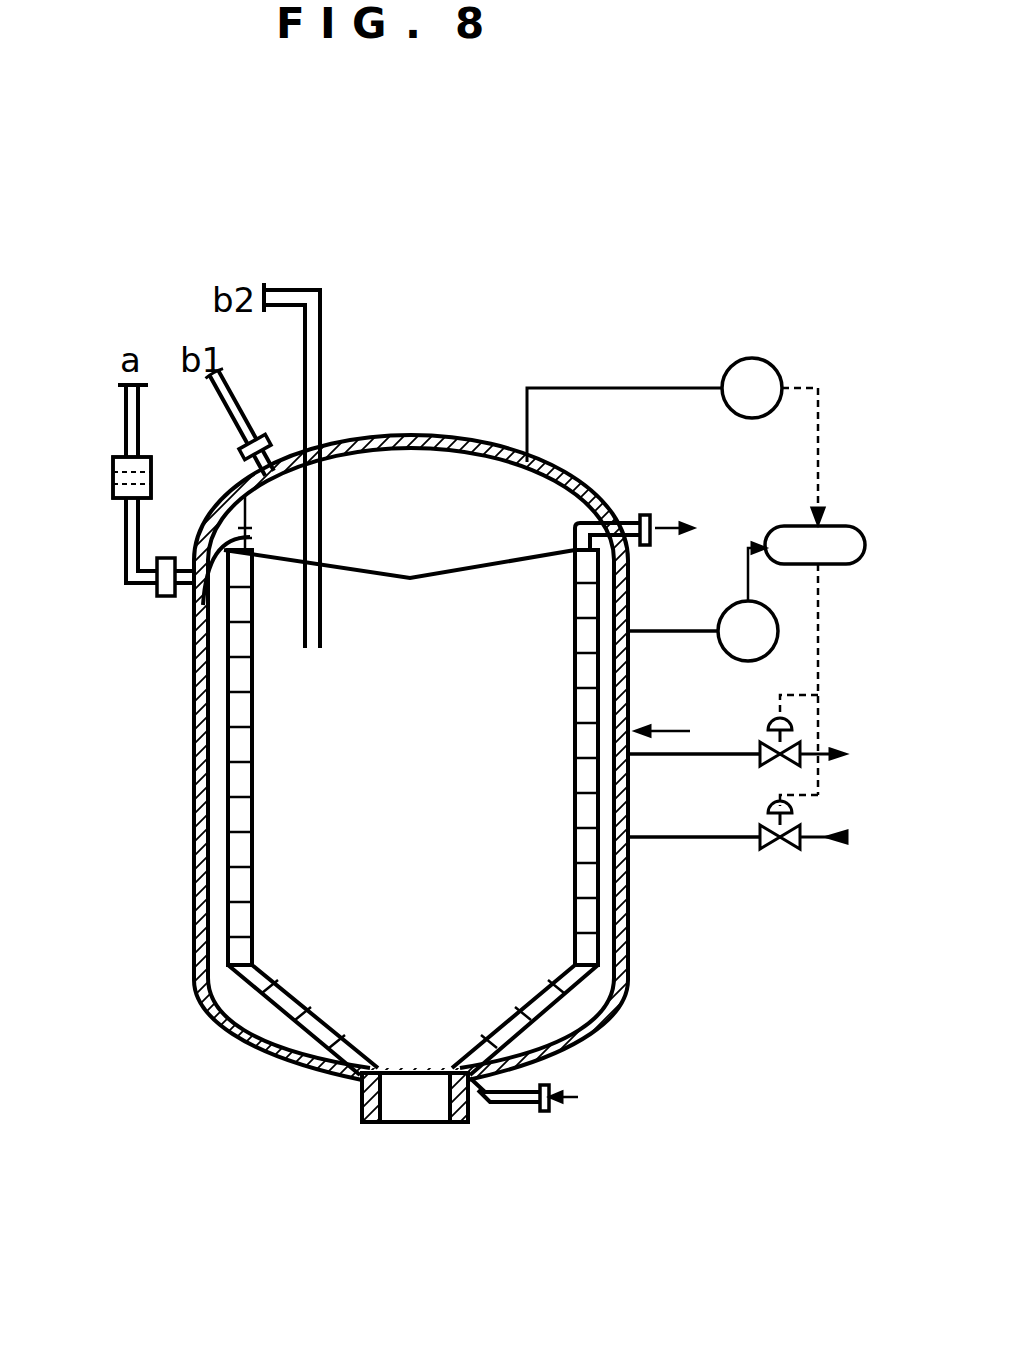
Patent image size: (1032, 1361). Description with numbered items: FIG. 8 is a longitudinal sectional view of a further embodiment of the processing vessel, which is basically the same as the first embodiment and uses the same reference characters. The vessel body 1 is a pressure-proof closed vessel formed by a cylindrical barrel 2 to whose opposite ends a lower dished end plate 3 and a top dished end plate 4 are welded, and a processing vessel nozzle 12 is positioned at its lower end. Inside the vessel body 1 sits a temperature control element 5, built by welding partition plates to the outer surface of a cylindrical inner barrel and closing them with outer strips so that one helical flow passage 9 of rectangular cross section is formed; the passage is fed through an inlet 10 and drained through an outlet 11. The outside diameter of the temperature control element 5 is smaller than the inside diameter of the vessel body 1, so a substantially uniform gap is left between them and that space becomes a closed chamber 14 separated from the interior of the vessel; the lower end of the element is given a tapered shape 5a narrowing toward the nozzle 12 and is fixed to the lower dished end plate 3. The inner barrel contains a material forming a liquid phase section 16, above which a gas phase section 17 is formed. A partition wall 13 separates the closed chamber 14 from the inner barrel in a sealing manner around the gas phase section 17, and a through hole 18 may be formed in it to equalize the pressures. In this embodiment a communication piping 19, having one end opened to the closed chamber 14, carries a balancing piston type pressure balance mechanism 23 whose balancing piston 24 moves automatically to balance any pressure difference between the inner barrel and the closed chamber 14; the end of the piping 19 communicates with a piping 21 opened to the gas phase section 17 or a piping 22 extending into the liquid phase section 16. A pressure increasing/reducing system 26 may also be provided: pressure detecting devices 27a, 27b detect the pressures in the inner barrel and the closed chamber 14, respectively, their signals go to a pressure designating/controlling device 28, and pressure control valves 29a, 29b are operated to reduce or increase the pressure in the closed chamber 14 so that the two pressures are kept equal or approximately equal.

The vessel body 1 is at (694, 733).
The cylindrical barrel 2 is at (632, 812).
The lower dished end plate 3 is at (401, 799).
The top dished end plate 4 is at (553, 462).
The temperature control element 5 is at (626, 668).
The tapered shape 5a is at (268, 1040).
The helical flow passage 9 is at (240, 715).
The inlet 10 is at (542, 1108).
The outlet 11 is at (652, 522).
The processing vessel nozzle 12 is at (460, 1122).
The partition wall 13 is at (576, 526).
The closed chamber 14 is at (218, 808).
The liquid phase section 16 is at (540, 664).
The gas phase section 17 is at (462, 470).
The through hole 18 is at (207, 600).
The communication piping 19 is at (128, 557).
The piping 21 is at (255, 418).
The piping 22 is at (300, 290).
The balancing piston type pressure balance mechanism 23 is at (102, 474).
The balancing piston 24 is at (113, 478).
The pressure increasing/reducing system 26 is at (858, 512).
The pressure detecting device 27a is at (772, 362).
The pressure detecting device 27b is at (778, 642).
The pressure designating/controlling device 28 is at (752, 535).
The pressure control valve 29a is at (800, 742).
The second control valve 29b is at (790, 850).